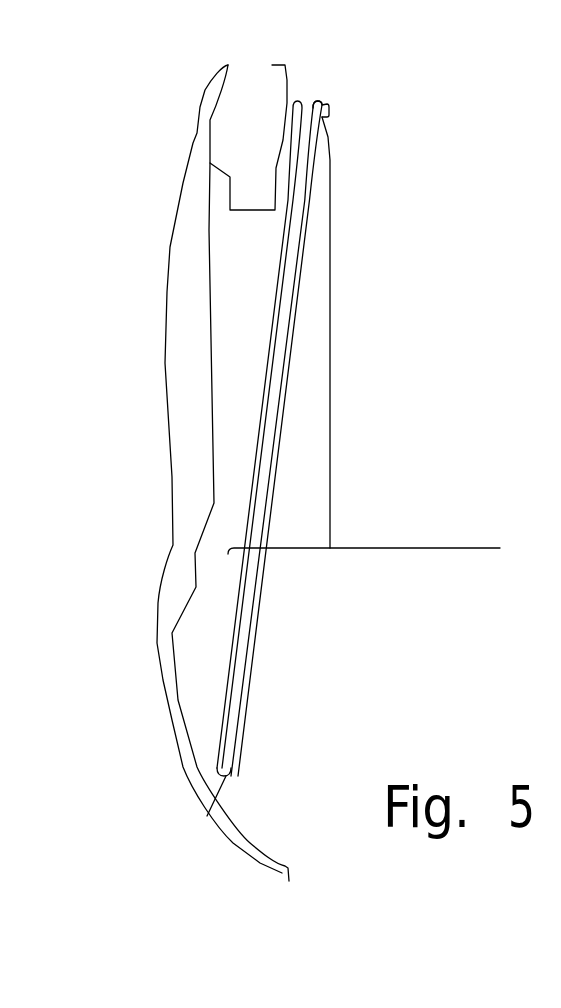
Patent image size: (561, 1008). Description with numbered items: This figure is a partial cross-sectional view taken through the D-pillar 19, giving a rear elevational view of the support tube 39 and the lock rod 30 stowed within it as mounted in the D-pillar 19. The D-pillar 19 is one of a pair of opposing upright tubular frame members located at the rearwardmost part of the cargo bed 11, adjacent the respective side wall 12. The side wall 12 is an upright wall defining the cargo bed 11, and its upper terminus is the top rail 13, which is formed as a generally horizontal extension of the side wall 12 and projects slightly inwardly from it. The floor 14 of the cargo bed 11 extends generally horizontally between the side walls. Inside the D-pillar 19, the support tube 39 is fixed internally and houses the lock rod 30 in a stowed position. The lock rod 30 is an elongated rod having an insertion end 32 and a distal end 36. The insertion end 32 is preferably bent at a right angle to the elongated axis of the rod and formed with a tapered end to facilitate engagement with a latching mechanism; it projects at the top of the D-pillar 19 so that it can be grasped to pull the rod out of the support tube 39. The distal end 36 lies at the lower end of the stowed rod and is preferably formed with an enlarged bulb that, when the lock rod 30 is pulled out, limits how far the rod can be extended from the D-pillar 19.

The cargo bed 11 is at (441, 370).
The side wall 12 is at (167, 292).
The top rail 13 is at (283, 64).
The floor 14 is at (397, 547).
The D-pillar 19 is at (322, 283).
The lock rod 30 is at (297, 210).
The insertion end 32 is at (318, 100).
The distal end 36 is at (207, 816).
The support tube 39 is at (282, 433).